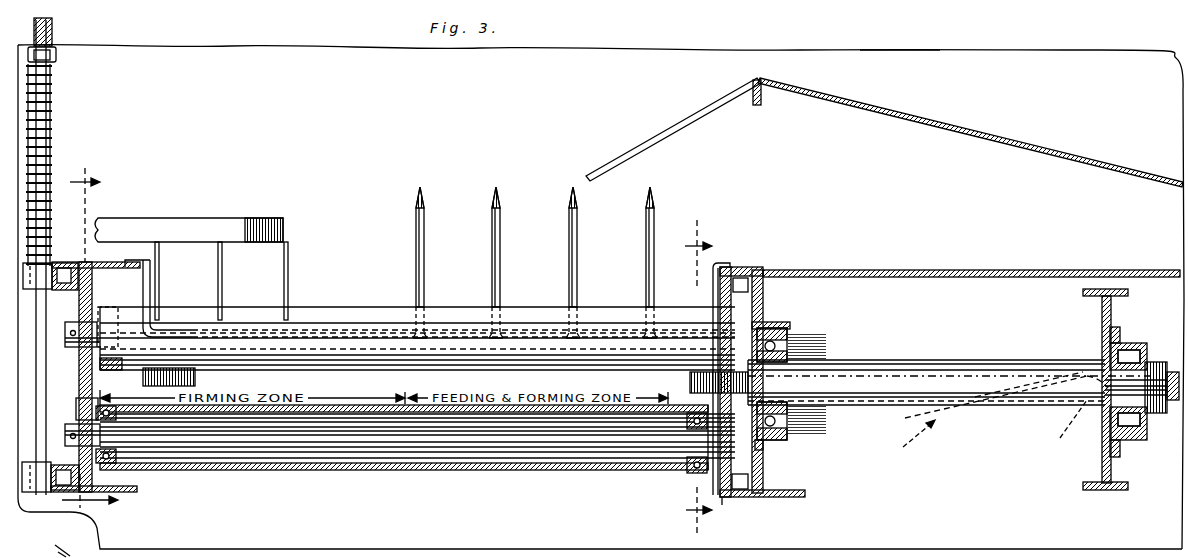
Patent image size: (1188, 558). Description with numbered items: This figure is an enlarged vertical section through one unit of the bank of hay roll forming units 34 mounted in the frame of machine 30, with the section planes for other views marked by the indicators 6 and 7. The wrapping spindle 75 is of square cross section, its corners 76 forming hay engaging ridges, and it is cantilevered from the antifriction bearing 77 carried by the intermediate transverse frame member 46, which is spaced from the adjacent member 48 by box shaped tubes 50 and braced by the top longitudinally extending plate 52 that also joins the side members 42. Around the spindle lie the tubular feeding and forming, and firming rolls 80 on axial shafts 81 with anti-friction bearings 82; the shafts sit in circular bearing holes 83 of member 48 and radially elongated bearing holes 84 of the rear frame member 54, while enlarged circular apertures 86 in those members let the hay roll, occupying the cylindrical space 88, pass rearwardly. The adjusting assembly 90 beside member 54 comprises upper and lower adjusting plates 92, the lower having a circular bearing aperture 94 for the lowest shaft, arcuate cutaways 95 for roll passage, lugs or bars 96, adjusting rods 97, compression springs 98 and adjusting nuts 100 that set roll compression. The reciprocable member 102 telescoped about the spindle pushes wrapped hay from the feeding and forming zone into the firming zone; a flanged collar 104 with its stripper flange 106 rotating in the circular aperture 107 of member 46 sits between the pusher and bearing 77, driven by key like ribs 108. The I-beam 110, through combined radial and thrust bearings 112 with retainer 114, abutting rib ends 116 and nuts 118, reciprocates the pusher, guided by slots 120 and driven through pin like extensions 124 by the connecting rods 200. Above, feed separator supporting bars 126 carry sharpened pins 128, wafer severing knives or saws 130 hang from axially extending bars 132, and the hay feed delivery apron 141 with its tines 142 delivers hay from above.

The section line 6- 6 is at (82, 338).
The section line 7- 7 is at (683, 377).
The frame of machine 30 is at (687, 46).
The bank of hay roll forming units 34 is at (352, 307).
The side members of the frame 42 is at (899, 40).
The intermediate transverse frame member 46 is at (765, 498).
The intermediate transverse frame member 48 is at (724, 500).
The box shaped tubes 50 is at (745, 270).
The top longitudinally extending plate 52 is at (890, 270).
The rear transversely extending frame member 54 is at (89, 262).
The wrapping spindle 75 is at (312, 372).
The corners of the spindle 76 is at (160, 378).
The antifriction bearing 77 is at (786, 335).
The feeding and forming, and firming rolls 80 is at (520, 309).
The axial shafts 81 is at (450, 325).
The anti-friction bearings 82 is at (117, 456).
The circular roll shaft bearing holes 83 is at (700, 393).
The radially elongated roll shaft bearing holes 84 is at (100, 320).
The enlarged circular apertures 86 is at (83, 415).
The cylindrical space 88 is at (363, 395).
The adjusting assembly 90 is at (55, 160).
The adjusting plates 92 is at (82, 262).
The circular bearing aperture 94 is at (96, 431).
The arcuate cutaways 95 is at (78, 350).
The lugs or bars 96 is at (52, 287).
The adjusting rods 97 is at (53, 28).
The compression springs 98 is at (54, 106).
The adjusting nuts 100 is at (57, 56).
The reciprocable member 102 is at (927, 370).
The flanged collar 104 is at (793, 417).
The flange 106 is at (717, 303).
The circular aperture 107 is at (762, 327).
The key like ribs 108 is at (987, 363).
The I-beam 110 is at (1092, 490).
The combined radial and thrust bearings 112 is at (1130, 343).
The retainer 114 is at (1113, 327).
The abutting rib ends 116 is at (1107, 363).
The nuts 118 is at (1157, 417).
The slots 120 is at (883, 357).
The pin like extensions 124 is at (1065, 428).
The feed separator supporting bars 126 is at (228, 328).
The pins 128 is at (494, 216).
The wafer severing knives or saws 130 is at (288, 253).
The axially extending bars 132 is at (204, 216).
The hay feed delivery apron 141 is at (990, 101).
The tines 142 is at (693, 118).
The connecting rods 200 is at (906, 443).